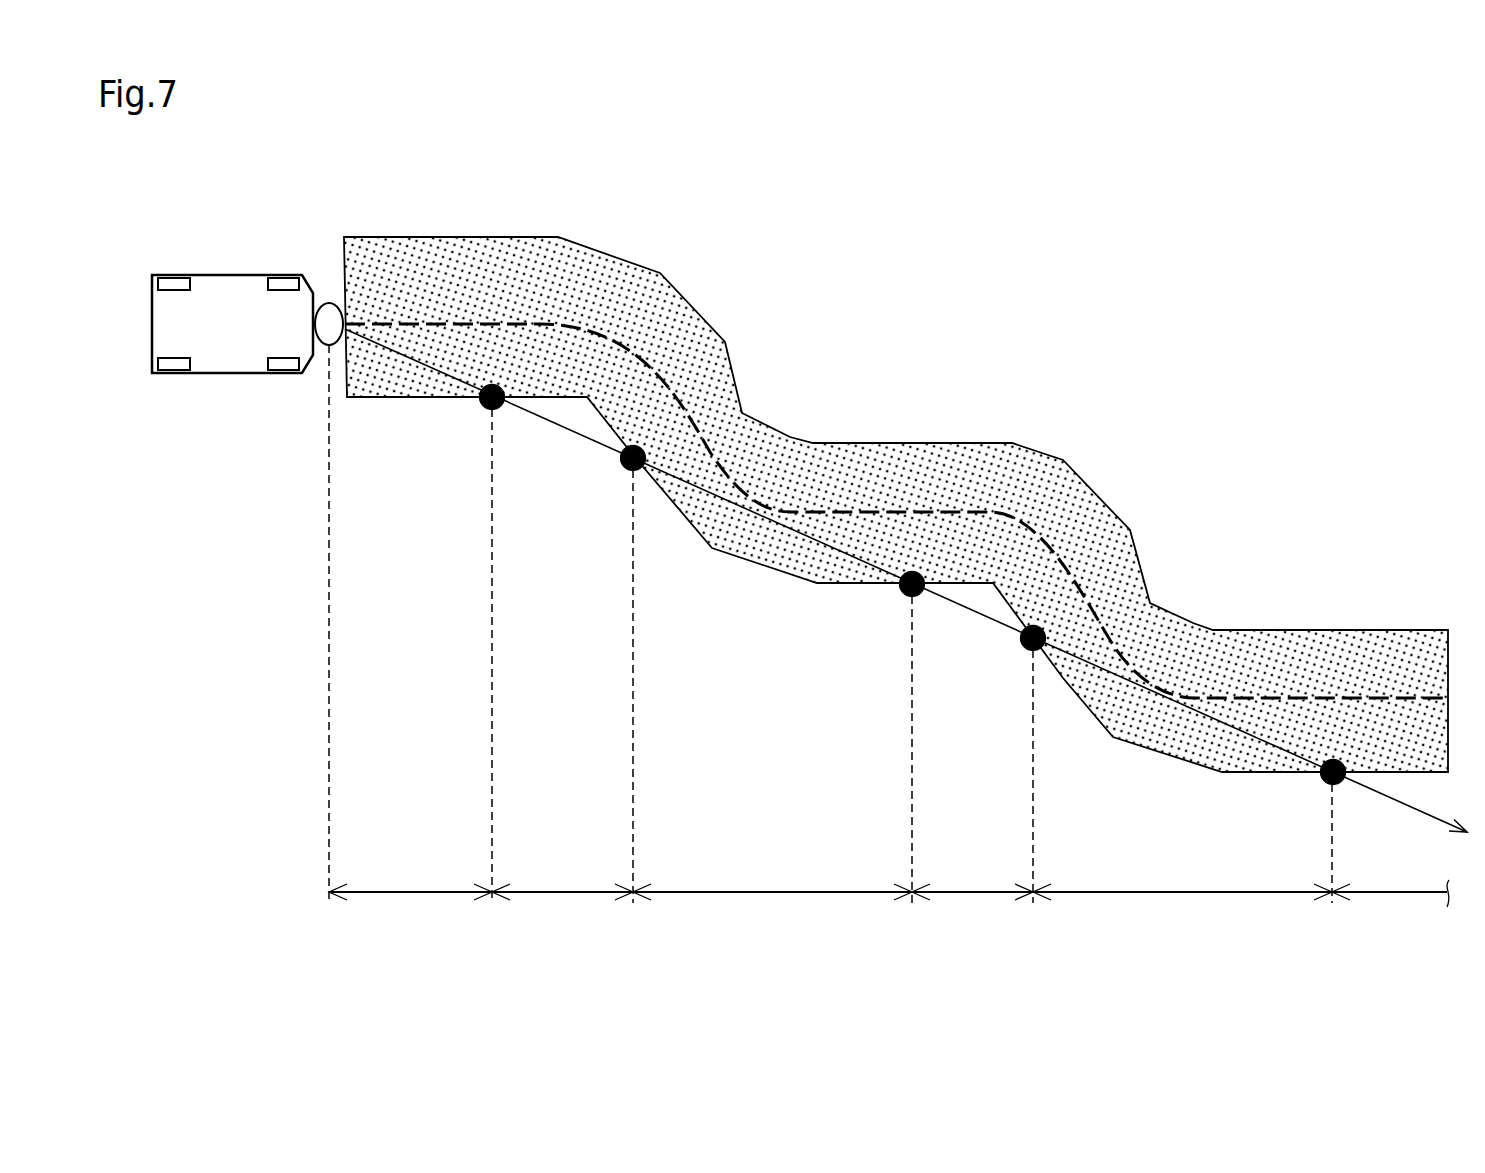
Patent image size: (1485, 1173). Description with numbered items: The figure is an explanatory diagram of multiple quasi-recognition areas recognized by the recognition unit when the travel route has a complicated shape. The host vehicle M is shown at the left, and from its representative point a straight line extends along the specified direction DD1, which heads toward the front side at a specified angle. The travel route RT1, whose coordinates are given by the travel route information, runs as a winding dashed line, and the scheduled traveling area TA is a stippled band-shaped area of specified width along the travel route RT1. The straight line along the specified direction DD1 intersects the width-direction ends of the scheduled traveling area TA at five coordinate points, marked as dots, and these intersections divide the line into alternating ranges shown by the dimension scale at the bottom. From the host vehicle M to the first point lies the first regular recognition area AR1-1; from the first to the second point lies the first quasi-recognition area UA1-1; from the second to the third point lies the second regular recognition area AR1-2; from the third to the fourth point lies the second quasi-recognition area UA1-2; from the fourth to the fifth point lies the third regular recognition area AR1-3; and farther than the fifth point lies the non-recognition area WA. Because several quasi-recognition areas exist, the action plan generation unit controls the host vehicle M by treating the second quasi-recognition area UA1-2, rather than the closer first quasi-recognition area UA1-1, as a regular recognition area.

The host vehicle M is at (232, 373).
The scheduled traveling area TA is at (686, 297).
The travel route RT1 is at (917, 508).
The specified direction DD1 is at (1395, 801).
The first regular recognition area AR1-1 is at (413, 896).
The first quasi-recognition area UA1-1 is at (570, 896).
The second regular recognition area AR1-2 is at (775, 896).
The second quasi-recognition area UA1-2 is at (977, 896).
The third regular recognition area AR1-3 is at (1180, 896).
The non-recognition area WA is at (1398, 896).